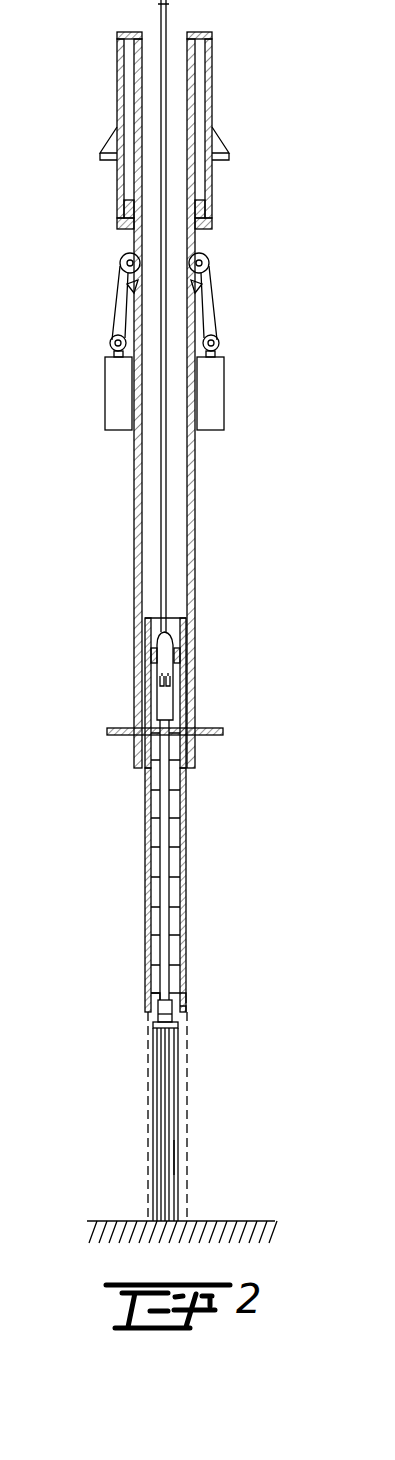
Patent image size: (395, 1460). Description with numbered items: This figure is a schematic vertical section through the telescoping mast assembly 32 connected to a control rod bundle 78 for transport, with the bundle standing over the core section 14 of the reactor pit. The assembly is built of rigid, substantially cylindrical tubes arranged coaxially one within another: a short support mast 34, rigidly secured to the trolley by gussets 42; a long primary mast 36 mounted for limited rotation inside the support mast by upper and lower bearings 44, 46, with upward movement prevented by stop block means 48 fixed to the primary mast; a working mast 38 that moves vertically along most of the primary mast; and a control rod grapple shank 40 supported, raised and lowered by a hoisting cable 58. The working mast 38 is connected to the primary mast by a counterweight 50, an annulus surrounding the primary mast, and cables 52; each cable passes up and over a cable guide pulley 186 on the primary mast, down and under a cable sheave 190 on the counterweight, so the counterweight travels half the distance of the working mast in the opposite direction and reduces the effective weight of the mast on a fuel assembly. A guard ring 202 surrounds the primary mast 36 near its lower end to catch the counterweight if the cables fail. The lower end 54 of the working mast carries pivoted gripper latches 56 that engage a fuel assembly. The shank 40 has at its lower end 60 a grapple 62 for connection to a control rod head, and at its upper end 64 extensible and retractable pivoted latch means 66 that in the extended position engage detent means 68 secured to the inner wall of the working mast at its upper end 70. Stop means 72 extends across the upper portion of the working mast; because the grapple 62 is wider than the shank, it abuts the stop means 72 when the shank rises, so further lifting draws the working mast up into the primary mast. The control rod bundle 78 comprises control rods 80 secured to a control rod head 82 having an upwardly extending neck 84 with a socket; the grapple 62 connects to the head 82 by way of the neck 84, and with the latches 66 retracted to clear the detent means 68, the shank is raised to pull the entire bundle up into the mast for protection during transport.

The core section 14 is at (122, 1215).
The telescoping mast assembly 32 is at (130, 503).
The support mast 34 is at (213, 88).
The primary mast 36 is at (198, 538).
The working mast 38 is at (187, 803).
The control rod grapple shank 40 is at (170, 863).
The gussets 42 is at (102, 153).
The upper bearing 44 is at (205, 33).
The lower bearing 46 is at (204, 210).
The stop block means 48 is at (212, 225).
The counterweight 50 is at (105, 385).
The cables 52 is at (217, 302).
The lower end of the working mast 54 is at (187, 1003).
The gripper latches 56 is at (185, 1012).
The hoisting cable 58 is at (165, 17).
The lower end of the shank 60 is at (158, 992).
The grapple 62 is at (158, 1005).
The upper end of the shank 64 is at (170, 705).
The latch means 66 is at (173, 682).
The detent means 68 is at (150, 655).
The upper end of the working mast 70 is at (185, 623).
The stop means 72 is at (155, 725).
The control rod bundle 78 is at (190, 1067).
The control rods 80 is at (181, 1157).
The control rod head 82 is at (178, 1027).
The neck 84 is at (165, 1017).
The cable guide pulleys 186 is at (122, 260).
The cable sheaves 190 is at (110, 343).
The guard ring 202 is at (215, 725).